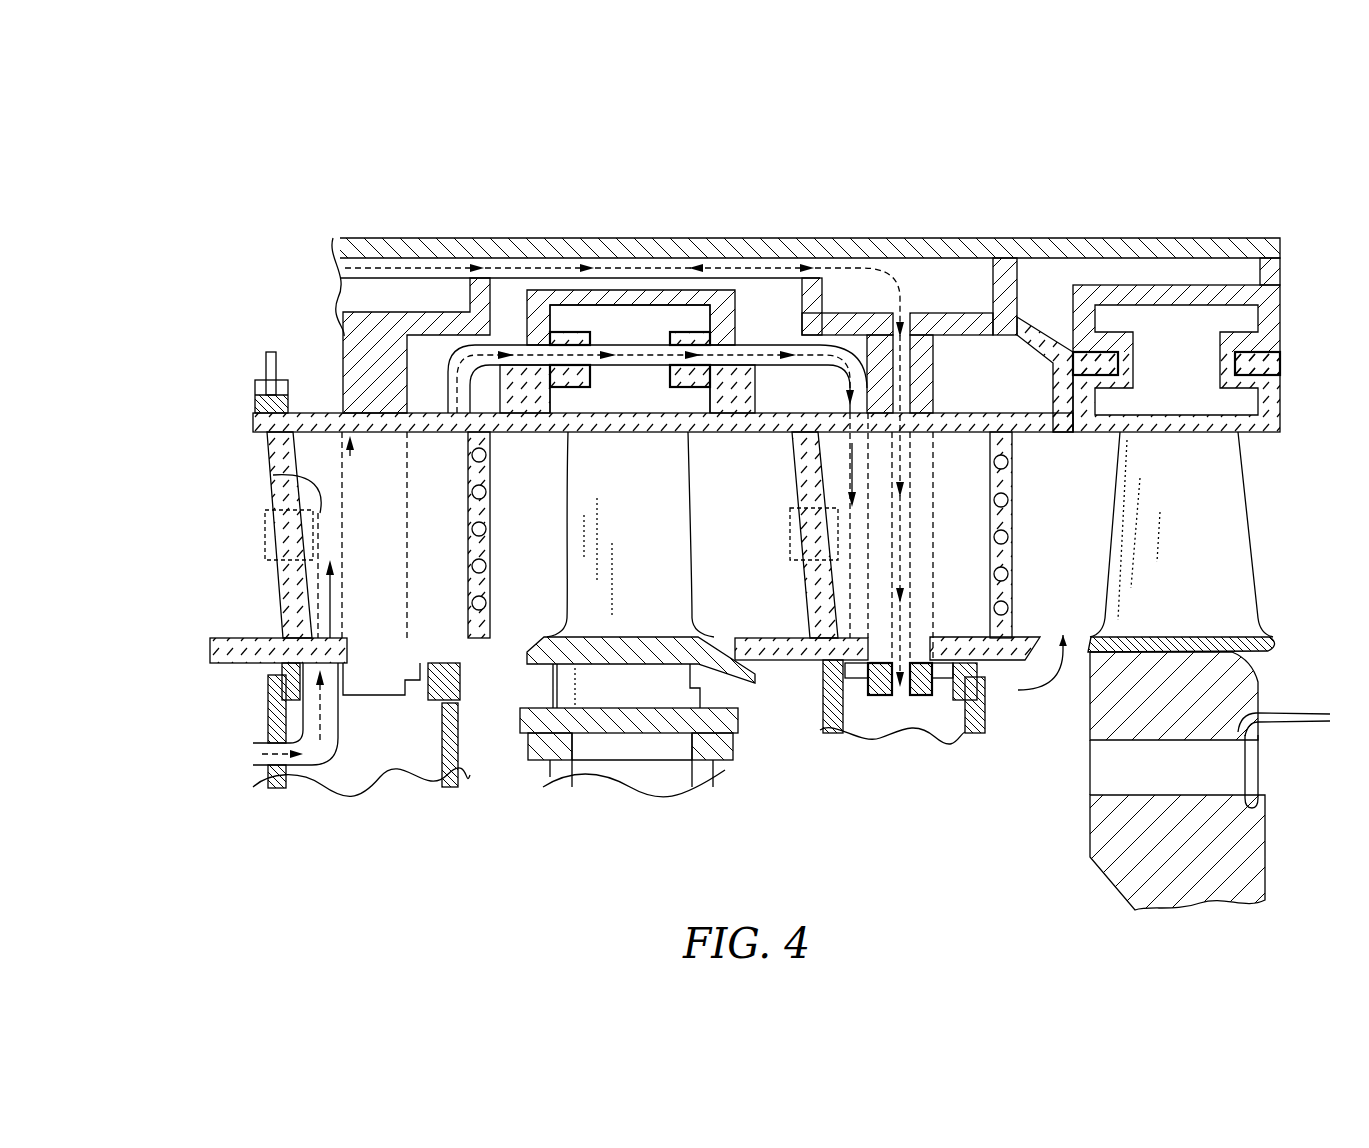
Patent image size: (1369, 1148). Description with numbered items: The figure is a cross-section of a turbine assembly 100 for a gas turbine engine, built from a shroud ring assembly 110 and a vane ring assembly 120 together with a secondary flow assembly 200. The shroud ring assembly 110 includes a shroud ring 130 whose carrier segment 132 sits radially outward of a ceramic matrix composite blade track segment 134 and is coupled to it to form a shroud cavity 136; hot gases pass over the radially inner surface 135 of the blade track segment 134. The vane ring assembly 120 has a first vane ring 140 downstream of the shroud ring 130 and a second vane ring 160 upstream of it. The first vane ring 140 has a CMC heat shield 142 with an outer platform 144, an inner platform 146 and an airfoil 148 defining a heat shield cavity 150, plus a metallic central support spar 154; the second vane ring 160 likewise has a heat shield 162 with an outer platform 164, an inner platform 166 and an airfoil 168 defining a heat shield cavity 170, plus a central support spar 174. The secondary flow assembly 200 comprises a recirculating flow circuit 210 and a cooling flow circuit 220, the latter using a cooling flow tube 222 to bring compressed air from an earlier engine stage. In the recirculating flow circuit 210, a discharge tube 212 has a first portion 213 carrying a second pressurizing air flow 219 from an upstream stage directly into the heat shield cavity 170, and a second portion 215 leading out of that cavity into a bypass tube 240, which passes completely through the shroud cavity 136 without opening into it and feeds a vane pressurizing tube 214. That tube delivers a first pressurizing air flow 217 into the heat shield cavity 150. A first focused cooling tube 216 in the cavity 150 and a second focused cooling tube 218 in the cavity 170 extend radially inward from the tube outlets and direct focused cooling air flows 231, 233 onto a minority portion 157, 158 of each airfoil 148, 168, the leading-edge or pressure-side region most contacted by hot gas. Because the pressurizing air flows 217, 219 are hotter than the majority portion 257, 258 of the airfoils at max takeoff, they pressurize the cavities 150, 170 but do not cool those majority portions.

The turbine assembly 100 is at (1262, 152).
The shroud ring assembly 110 is at (598, 233).
The vane ring assembly 120 is at (635, 128).
The shroud ring 130 is at (700, 290).
The carrier segment 132 is at (527, 293).
The blade track segment 134 is at (563, 438).
The radially inner surface 135 is at (532, 438).
The shroud cavity 136 is at (650, 406).
The first vane ring 140 is at (876, 234).
The first heat shield 142 is at (790, 498).
The outer platform 144 is at (1031, 438).
The inner platform 146 is at (1011, 678).
The airfoil 148 is at (808, 615).
The first heat shield cavity 150 is at (987, 536).
The central support spar 154 is at (940, 598).
The minority portion 157 is at (790, 538).
The minority portion 158 is at (263, 538).
The second vane ring 160 is at (357, 233).
The second heat shield 162 is at (262, 452).
The outer platform 164 is at (351, 460).
The inner platform 166 is at (236, 668).
The airfoil 168 is at (297, 595).
The second heat shield cavity 170 is at (462, 488).
The central support spar 174 is at (417, 615).
The secondary flow assembly 200 is at (288, 237).
The recirculating flow circuit 210 is at (158, 774).
The discharge tube 212 is at (252, 798).
The first portion 213 is at (333, 765).
The vane pressurizing tube 214 is at (803, 300).
The second portion 215 is at (490, 335).
The first focused cooling tube 216 is at (790, 452).
The first pressurizing air flow 217 is at (840, 368).
The second focused cooling tube 218 is at (272, 473).
The second pressurizing air flow 219 is at (340, 724).
The cooling flow circuit 220 is at (327, 279).
The cooling flow tube 222 is at (413, 256).
The focused cooling air flow 231 is at (855, 480).
The focused cooling air flow 233 is at (332, 603).
The bypass tube 240 is at (655, 322).
The majority portion 257 is at (997, 678).
The majority portion 258 is at (467, 668).